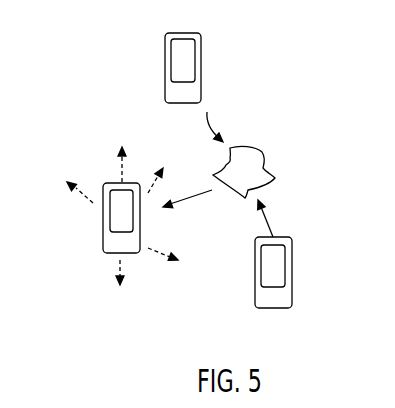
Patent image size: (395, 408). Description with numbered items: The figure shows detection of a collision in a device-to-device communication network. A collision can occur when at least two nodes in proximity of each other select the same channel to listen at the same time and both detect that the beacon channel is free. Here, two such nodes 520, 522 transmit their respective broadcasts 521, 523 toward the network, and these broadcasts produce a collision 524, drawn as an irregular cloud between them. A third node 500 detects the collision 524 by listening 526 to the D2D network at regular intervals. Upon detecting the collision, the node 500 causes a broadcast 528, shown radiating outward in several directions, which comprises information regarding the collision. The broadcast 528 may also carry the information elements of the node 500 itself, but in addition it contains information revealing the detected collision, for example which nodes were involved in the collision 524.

The node 500 is at (103, 243).
The node 520 is at (292, 287).
The broadcast 521 is at (268, 217).
The node 522 is at (201, 43).
The broadcast 523 is at (207, 112).
The collision 524 is at (262, 151).
The listening 526 is at (206, 194).
The broadcast 528 is at (121, 162).